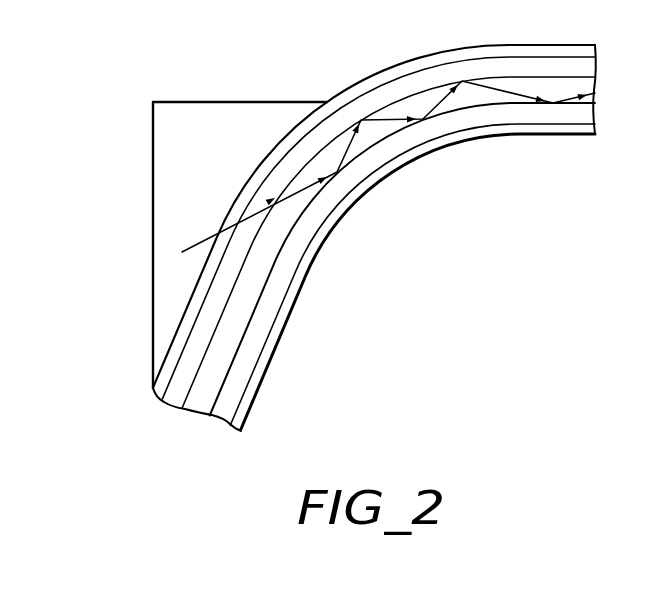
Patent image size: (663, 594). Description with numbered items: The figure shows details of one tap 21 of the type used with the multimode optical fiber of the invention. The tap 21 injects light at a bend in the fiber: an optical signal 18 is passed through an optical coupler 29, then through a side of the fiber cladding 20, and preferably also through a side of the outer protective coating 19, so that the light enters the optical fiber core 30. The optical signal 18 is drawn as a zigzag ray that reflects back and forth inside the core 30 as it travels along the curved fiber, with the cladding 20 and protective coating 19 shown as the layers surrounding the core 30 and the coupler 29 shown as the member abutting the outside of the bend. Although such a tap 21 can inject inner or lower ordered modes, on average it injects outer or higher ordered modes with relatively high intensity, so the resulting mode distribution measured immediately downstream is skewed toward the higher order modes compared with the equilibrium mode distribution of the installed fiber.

The optical signal 18 is at (200, 240).
The outer protective coating 19 is at (547, 127).
The fiber cladding 20 is at (472, 113).
The tap 21 is at (340, 258).
The optical coupler 29 is at (235, 102).
The optical fiber core 30 is at (367, 133).